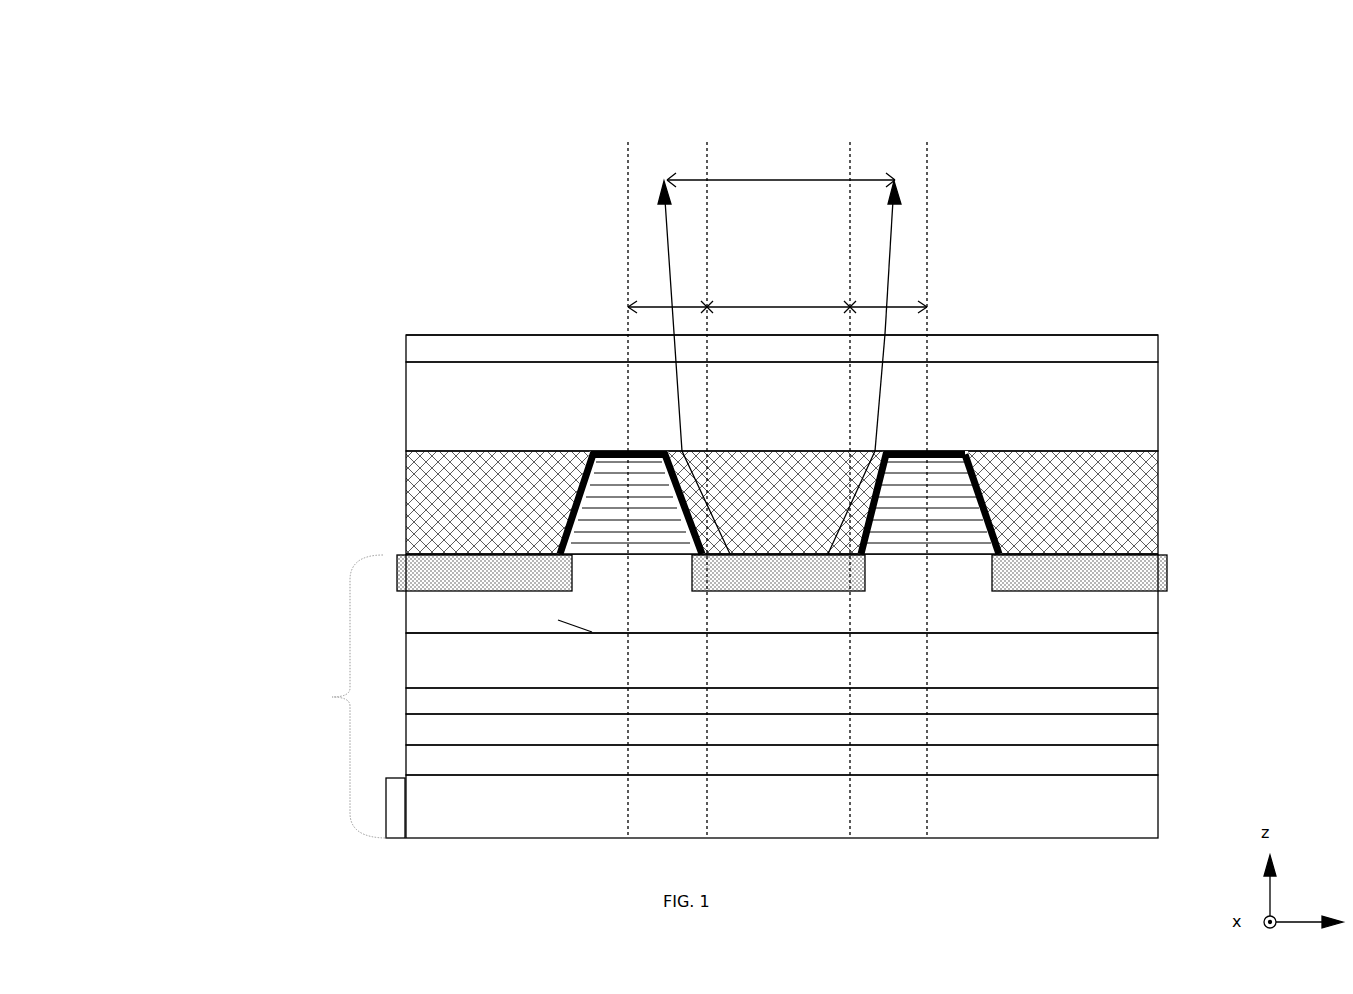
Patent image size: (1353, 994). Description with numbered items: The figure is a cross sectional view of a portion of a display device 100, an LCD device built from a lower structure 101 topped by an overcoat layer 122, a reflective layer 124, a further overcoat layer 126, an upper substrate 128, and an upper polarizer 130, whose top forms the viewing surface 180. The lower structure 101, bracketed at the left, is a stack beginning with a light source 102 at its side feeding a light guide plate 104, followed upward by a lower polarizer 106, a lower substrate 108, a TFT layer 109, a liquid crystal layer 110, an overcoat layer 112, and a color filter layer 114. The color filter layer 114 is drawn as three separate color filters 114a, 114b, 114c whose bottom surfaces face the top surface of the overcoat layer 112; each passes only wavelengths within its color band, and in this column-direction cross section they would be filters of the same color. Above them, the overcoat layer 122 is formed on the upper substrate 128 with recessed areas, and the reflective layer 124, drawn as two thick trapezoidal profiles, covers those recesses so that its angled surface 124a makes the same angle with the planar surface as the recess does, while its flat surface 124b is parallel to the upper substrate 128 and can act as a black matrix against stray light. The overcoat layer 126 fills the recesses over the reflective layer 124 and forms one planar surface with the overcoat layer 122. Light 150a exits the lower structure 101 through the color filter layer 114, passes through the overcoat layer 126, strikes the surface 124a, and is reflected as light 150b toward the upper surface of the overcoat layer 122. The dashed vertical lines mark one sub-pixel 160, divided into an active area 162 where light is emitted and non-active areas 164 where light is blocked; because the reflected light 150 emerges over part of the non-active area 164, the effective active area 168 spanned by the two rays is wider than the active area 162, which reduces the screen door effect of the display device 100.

The display device 100 is at (108, 35).
The lower structure 101 is at (313, 696).
The light source 102 is at (386, 830).
The light guide plate 104 is at (782, 806).
The lower polarizer 106 is at (782, 760).
The lower substrate 108 is at (782, 729).
The TFT layer 109 is at (782, 701).
The liquid crystal layer 110 is at (782, 660).
The overcoat layer 112 is at (782, 593).
The color filter layer 114 is at (657, 593).
The color filter 114a is at (463, 583).
The color filter 114b is at (747, 583).
The color filter 114c is at (1059, 582).
The overcoat layer 122 is at (425, 532).
The reflective layer 124 is at (665, 472).
The surface of the reflective layer 124a is at (972, 553).
The surface of the reflective layer 124b is at (950, 450).
The overcoat layer 126 is at (598, 490).
The upper substrate 128 is at (423, 407).
The upper polarizer 130 is at (428, 345).
The reflected light 150 is at (867, 340).
The light 150a is at (840, 530).
The light 150b is at (872, 465).
The sub-pixel 160 is at (925, 817).
The active area 162 is at (778, 490).
The non-active area 164 is at (968, 230).
The effective active area 168 is at (787, 180).
The viewing surface 180 is at (1100, 337).